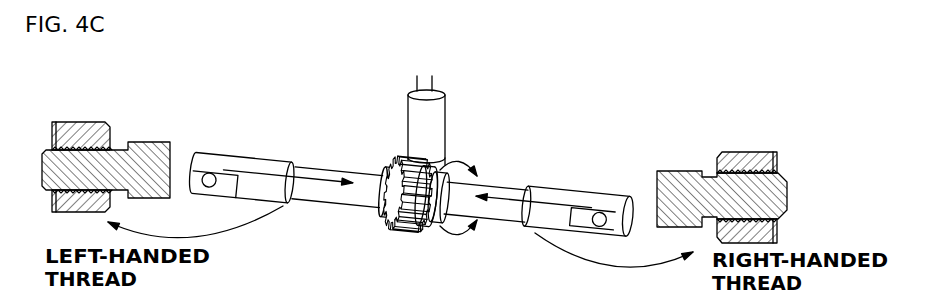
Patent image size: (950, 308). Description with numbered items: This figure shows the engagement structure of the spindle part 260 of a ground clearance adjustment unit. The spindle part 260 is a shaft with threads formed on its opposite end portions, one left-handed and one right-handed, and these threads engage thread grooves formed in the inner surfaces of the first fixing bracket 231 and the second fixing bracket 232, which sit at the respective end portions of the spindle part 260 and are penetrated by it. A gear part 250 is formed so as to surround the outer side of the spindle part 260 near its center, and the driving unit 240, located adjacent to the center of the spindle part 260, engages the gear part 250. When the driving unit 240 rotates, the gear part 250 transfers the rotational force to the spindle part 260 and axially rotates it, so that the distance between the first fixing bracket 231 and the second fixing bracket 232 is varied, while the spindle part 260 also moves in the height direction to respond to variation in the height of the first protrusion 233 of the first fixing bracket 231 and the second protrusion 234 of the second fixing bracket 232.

The first fixing bracket 231 is at (551, 191).
The second fixing bracket 232 is at (256, 162).
The first protrusion 233 is at (604, 214).
The second protrusion 234 is at (208, 174).
The driving unit 240 is at (413, 122).
The gear part 250 is at (413, 214).
The spindle part 260 is at (495, 190).